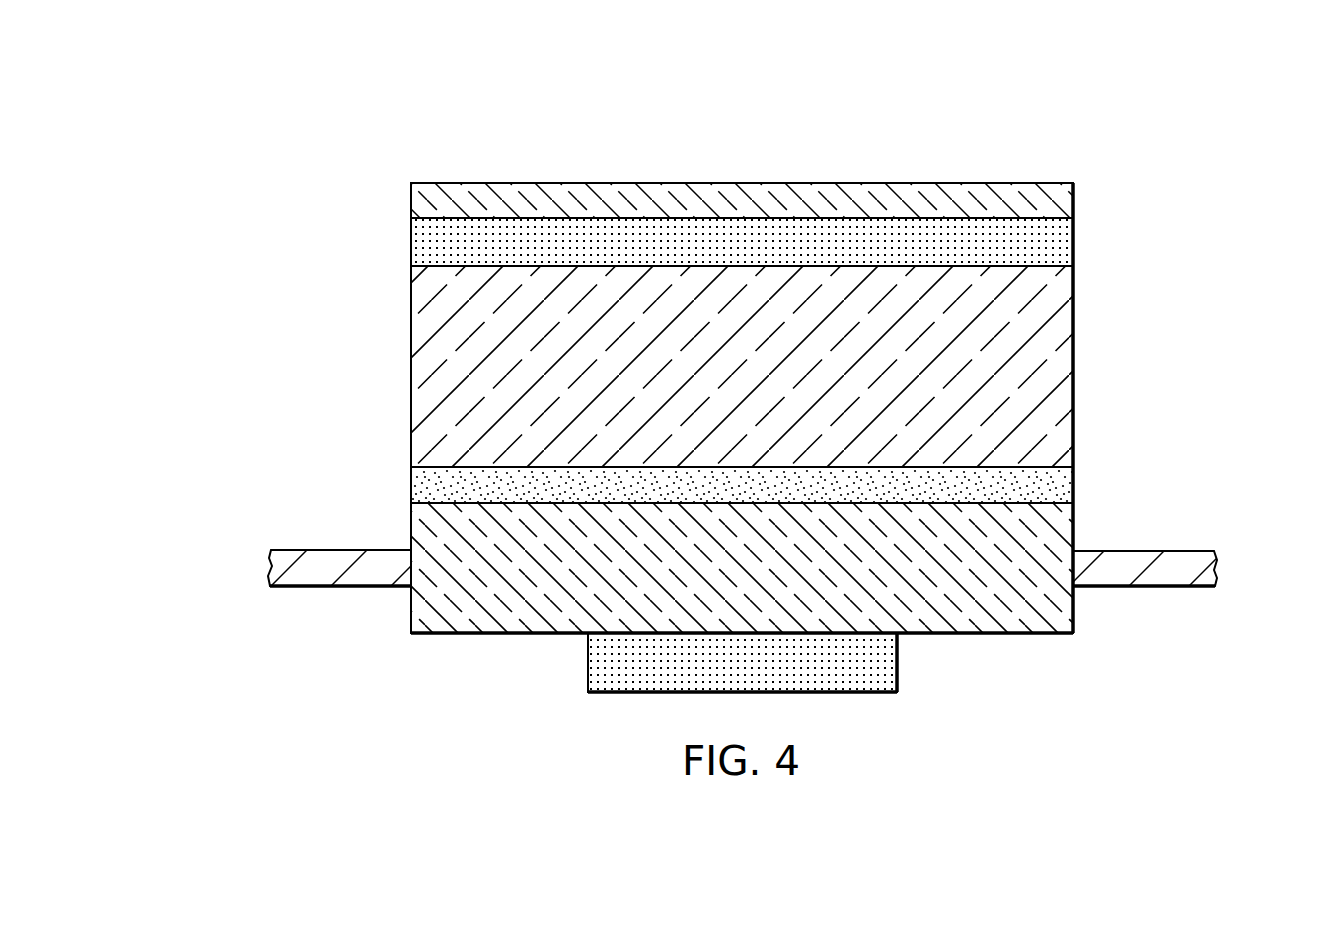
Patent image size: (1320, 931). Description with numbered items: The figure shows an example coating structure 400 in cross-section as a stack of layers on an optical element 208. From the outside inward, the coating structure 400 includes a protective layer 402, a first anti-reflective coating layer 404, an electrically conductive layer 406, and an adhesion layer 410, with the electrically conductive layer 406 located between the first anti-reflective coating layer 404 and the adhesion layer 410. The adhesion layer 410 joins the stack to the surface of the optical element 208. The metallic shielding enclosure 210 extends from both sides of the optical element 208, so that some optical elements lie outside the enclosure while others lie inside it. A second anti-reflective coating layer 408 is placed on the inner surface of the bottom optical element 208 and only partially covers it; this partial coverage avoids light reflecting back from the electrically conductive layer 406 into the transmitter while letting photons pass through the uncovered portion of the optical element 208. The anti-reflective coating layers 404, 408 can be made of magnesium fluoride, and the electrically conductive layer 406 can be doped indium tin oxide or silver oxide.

The coating structure 400 is at (500, 108).
The protective layer 402 is at (752, 190).
The first anti-reflective coating layer 404 is at (1063, 242).
The electrically conductive layer 406 is at (420, 370).
The second anti-reflective coating layer 408 is at (948, 690).
The adhesion layer 410 is at (1063, 483).
The optical element 208 is at (514, 625).
The metallic shielding enclosure 210 is at (269, 566).